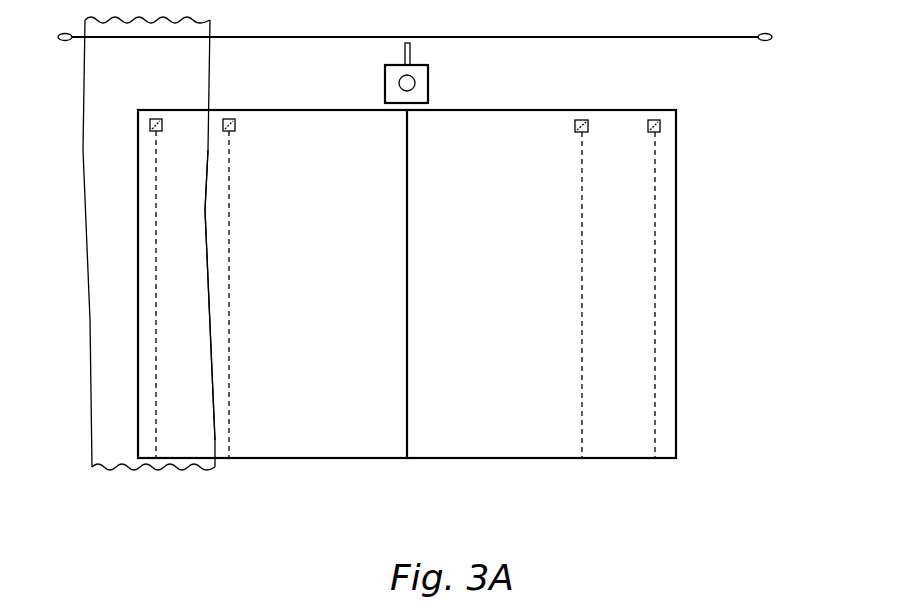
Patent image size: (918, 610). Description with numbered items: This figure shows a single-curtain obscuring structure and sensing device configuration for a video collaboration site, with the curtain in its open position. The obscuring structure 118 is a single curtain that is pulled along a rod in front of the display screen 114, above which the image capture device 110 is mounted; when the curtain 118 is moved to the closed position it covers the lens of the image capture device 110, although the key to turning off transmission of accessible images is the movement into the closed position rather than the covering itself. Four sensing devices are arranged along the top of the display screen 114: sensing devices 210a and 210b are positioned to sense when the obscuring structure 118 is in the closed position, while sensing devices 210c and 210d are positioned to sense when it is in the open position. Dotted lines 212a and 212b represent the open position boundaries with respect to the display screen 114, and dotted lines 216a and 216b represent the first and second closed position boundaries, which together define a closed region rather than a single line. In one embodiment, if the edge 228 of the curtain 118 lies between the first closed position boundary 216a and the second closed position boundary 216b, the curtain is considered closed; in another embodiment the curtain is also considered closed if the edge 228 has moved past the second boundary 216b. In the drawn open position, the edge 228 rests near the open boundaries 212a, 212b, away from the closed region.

The image capture device 110 is at (425, 79).
The display screen 114 is at (337, 458).
The obscuring structure 118 is at (112, 348).
The sensing device 210a is at (229, 120).
The sensing device 210b is at (580, 122).
The sensing device 210c is at (152, 118).
The sensing device 210d is at (660, 130).
The open position boundary 212a is at (154, 390).
The open position boundary 212b is at (229, 418).
The first closed position boundary 216a is at (582, 458).
The second closed position boundary 216b is at (655, 458).
The edge of the curtain 228 is at (205, 252).